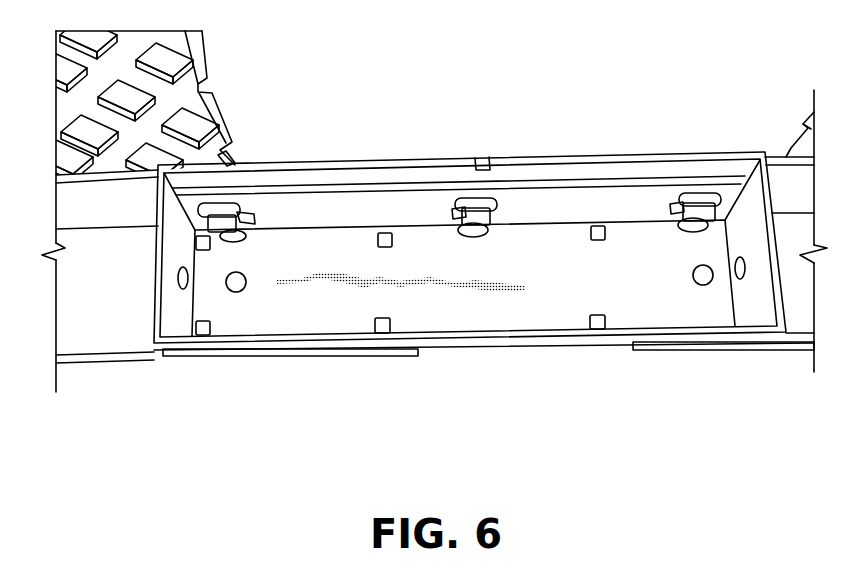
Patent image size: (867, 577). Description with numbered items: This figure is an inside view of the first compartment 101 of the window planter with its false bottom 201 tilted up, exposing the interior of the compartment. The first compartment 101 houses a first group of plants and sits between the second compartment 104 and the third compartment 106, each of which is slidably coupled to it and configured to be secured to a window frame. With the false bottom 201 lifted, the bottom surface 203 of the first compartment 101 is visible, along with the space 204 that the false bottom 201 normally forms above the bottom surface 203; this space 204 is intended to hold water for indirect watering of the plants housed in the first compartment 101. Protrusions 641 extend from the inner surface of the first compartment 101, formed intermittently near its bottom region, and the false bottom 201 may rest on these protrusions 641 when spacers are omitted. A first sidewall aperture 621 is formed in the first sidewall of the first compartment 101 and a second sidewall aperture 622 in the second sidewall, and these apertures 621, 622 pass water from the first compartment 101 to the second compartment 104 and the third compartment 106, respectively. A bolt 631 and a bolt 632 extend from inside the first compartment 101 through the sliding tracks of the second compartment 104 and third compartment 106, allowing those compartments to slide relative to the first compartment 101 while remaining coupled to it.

The first compartment 101 is at (542, 338).
The second compartment 104 is at (388, 356).
The third compartment 106 is at (723, 350).
The false bottom 201 is at (407, 210).
The bottom surface 203 is at (610, 283).
The space 204 is at (503, 278).
The first sidewall aperture 621 is at (183, 297).
The second sidewall aperture 622 is at (745, 285).
The bolt 631 is at (236, 284).
The bolt 632 is at (695, 274).
The protrusions 641 is at (375, 326).